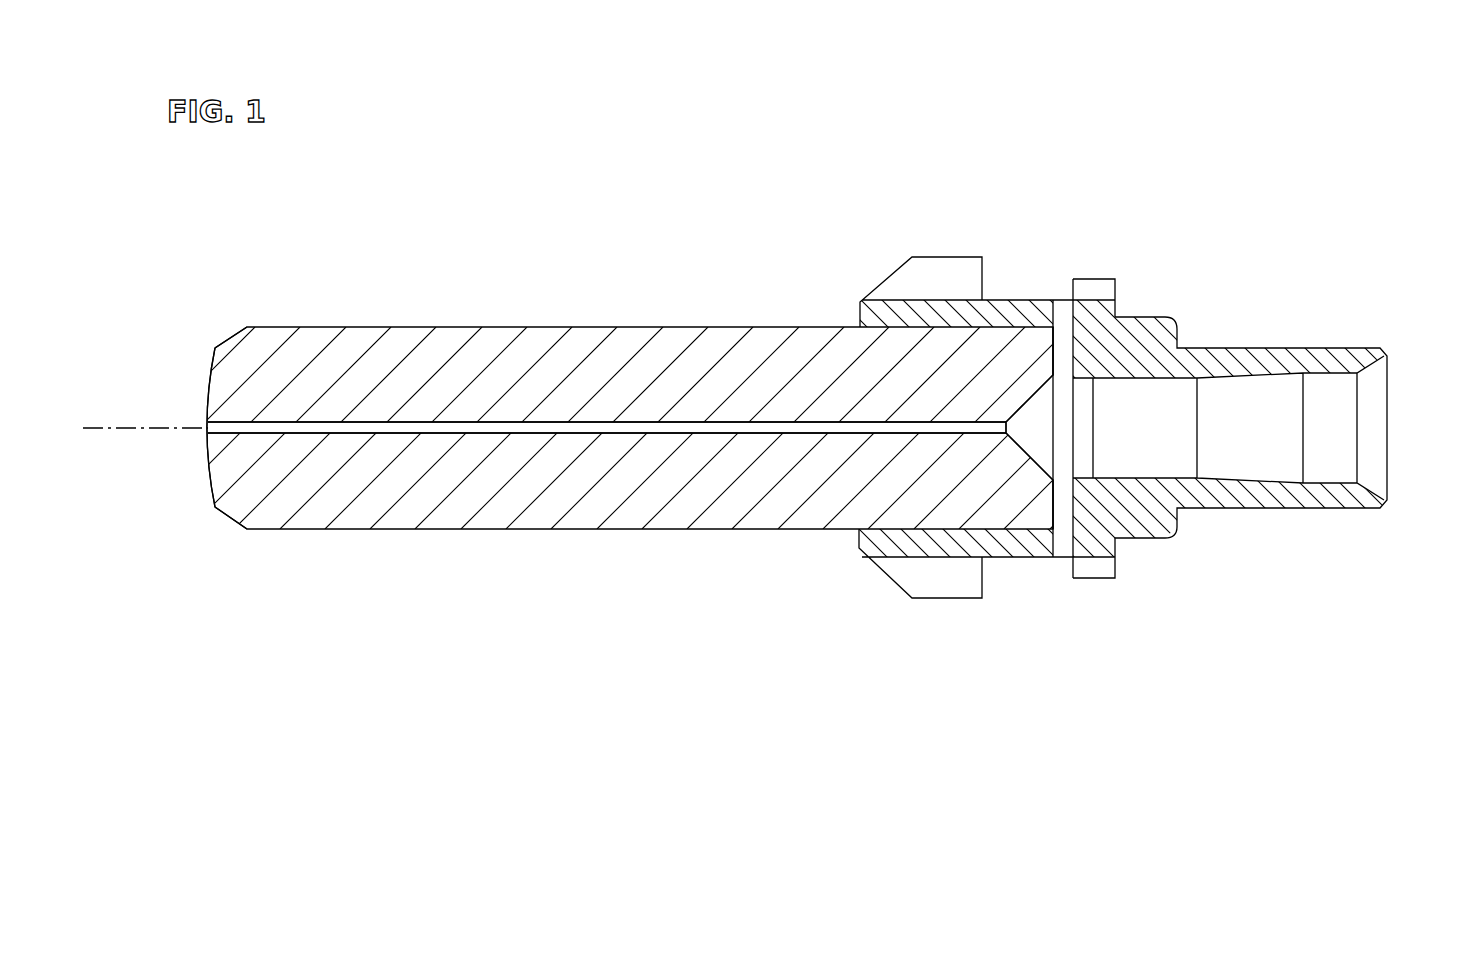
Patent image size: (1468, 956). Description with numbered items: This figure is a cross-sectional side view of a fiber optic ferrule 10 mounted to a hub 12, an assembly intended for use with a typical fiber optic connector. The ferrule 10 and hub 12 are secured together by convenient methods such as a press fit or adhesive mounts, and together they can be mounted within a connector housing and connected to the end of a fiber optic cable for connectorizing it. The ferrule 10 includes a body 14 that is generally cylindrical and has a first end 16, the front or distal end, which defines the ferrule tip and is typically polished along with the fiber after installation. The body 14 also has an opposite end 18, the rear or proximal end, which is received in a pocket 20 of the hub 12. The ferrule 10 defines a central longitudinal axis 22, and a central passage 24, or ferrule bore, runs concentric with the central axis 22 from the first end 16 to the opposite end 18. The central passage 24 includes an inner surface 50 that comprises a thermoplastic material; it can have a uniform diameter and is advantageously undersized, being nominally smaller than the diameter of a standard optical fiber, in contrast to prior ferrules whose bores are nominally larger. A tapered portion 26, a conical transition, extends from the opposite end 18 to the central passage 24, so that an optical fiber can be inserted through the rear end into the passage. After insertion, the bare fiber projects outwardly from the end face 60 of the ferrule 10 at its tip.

The fiber optic ferrule 10 is at (749, 250).
The hub 12 is at (1143, 315).
The body 14 is at (458, 327).
The first end 16 is at (216, 544).
The opposite end 18 is at (1055, 490).
The pocket 20 is at (1075, 358).
The central longitudinal axis 22 is at (113, 428).
The central passage 24 is at (337, 433).
The tapered portion 26 is at (1037, 395).
The inner surface 50 is at (642, 423).
The end face 60 is at (210, 480).